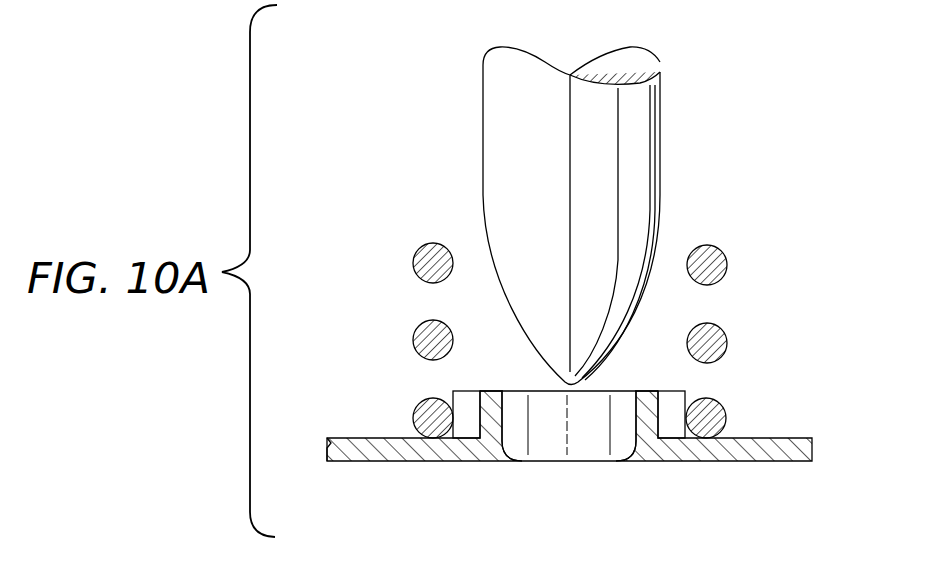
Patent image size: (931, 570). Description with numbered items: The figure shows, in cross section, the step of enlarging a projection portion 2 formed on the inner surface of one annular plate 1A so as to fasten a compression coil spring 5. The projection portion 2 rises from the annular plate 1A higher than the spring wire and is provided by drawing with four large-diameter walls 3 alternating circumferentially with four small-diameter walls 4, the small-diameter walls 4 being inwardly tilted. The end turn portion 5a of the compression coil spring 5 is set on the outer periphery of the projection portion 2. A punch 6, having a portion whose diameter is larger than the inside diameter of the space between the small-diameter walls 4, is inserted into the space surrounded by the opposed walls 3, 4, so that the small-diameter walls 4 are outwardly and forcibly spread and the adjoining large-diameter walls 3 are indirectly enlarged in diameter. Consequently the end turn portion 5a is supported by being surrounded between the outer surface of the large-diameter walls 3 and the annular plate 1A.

The annular plate 1A is at (362, 438).
The projection portion 2 is at (598, 424).
The large-diameter wall 3 is at (460, 398).
The small-diameter wall 4 is at (497, 392).
The compression coil spring 5 is at (727, 262).
The end turn portion 5a is at (722, 412).
The punch 6 is at (500, 128).